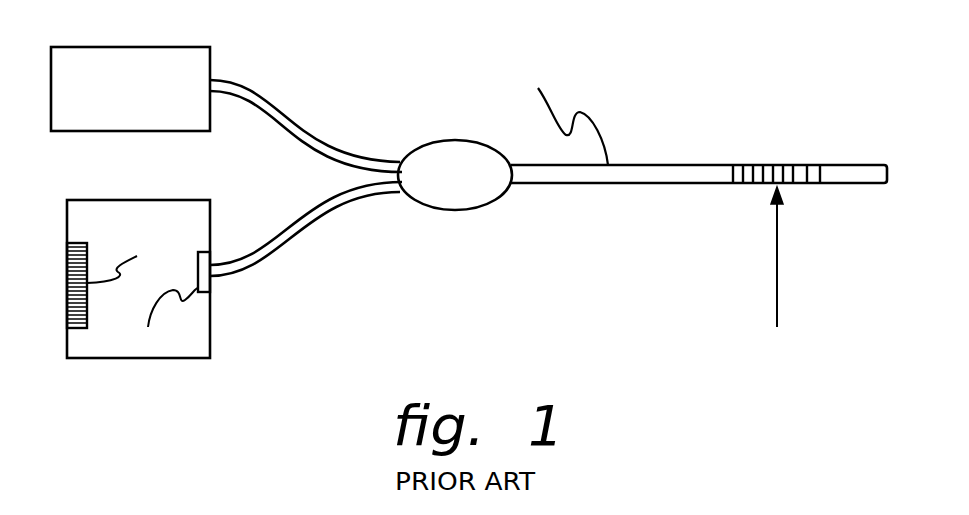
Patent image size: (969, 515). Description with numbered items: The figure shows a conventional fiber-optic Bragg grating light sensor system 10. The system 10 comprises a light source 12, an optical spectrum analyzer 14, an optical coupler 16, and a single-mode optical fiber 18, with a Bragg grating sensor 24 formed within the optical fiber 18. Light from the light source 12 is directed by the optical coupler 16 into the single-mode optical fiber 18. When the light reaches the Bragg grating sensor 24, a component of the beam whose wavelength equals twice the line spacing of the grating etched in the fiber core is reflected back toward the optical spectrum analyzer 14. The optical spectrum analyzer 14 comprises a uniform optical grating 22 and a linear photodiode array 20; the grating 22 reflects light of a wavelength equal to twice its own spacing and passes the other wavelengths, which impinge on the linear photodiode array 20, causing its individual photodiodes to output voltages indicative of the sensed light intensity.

The fiber-optic Bragg grating light sensor system 10 is at (738, 84).
The light source 12 is at (182, 46).
The optical spectrum analyzer 14 is at (177, 200).
The optical coupler 16 is at (452, 210).
The single-mode optical fiber 18 is at (625, 183).
The linear photodiode array 20 is at (67, 275).
The uniform optical grating 22 is at (210, 282).
The Bragg grating sensor 24 is at (782, 165).